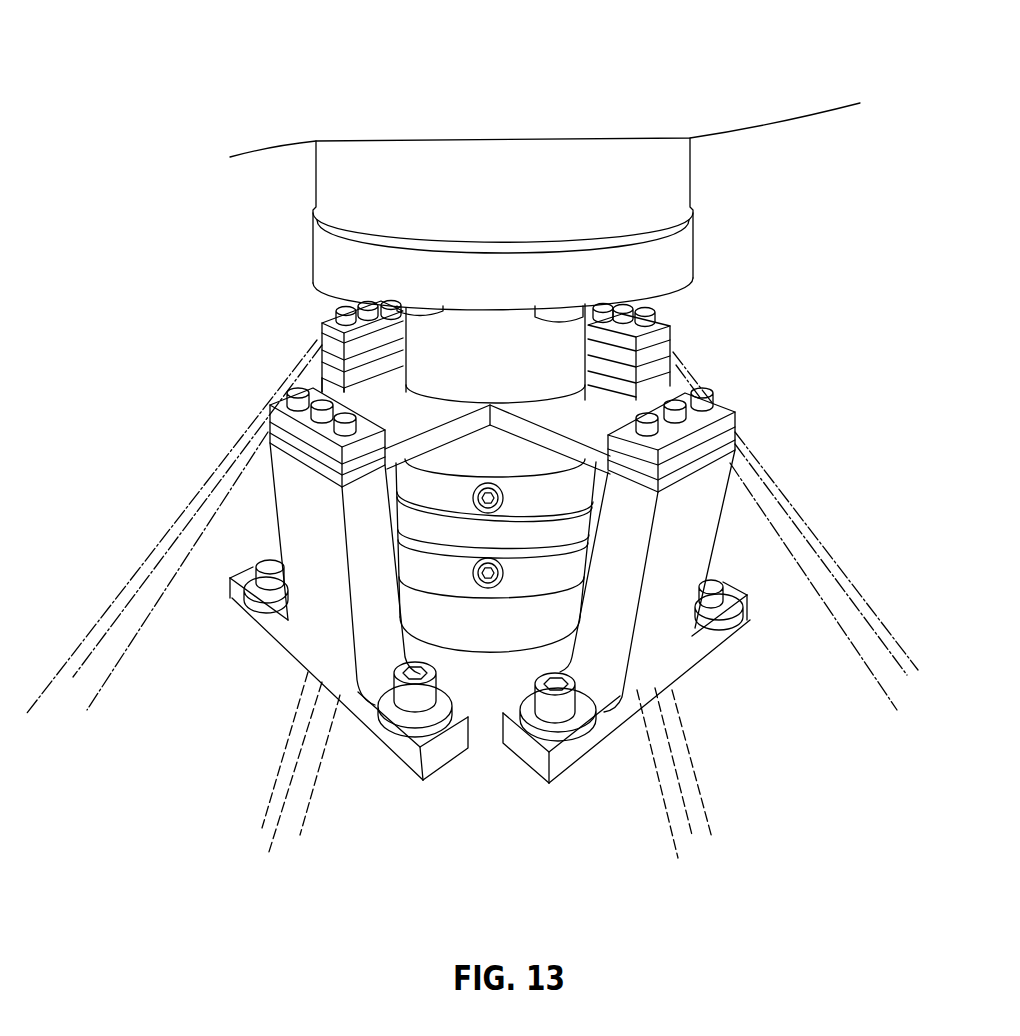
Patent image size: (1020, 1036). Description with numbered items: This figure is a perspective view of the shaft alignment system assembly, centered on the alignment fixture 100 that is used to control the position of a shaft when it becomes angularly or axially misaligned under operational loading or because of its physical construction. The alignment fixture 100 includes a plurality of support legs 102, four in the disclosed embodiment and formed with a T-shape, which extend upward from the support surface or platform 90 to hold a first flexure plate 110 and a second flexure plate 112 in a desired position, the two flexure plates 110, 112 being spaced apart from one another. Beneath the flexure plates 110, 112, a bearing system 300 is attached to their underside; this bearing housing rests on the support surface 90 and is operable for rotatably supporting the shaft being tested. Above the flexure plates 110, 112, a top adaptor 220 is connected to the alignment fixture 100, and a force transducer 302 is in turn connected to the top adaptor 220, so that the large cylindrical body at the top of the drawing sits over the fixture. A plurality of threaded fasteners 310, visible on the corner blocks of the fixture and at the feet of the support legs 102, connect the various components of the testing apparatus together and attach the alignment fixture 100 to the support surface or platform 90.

The support surface 90 is at (183, 717).
The alignment fixture 100 is at (168, 466).
The support legs 102 is at (682, 533).
The first flexure plate 110 is at (600, 412).
The second flexure plate 112 is at (413, 455).
The top adaptor 220 is at (545, 360).
The bearing system 300 is at (492, 632).
The force transducer 302 is at (585, 192).
The threaded fasteners 310 is at (268, 405).